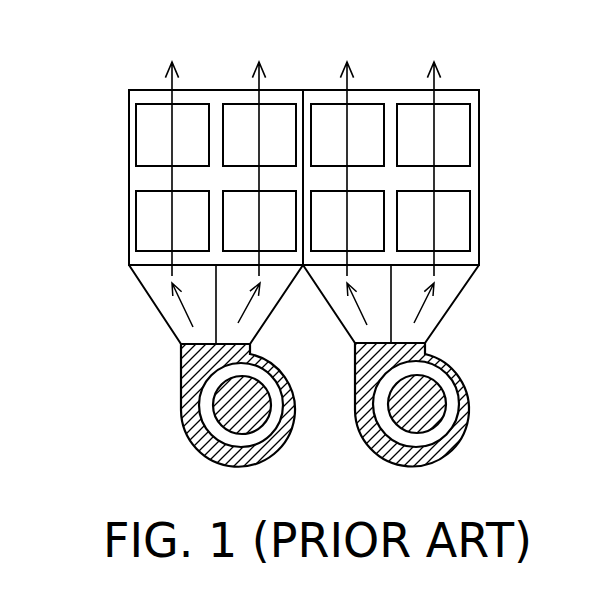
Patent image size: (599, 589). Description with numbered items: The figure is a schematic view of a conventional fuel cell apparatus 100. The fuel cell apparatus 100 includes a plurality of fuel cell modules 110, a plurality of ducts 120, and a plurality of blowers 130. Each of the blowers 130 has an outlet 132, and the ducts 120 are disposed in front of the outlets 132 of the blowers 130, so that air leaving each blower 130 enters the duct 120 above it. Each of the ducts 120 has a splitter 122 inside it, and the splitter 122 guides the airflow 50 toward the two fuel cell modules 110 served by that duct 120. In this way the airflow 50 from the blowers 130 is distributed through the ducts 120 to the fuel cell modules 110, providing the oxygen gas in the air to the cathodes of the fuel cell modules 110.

The fuel cell apparatus 100 is at (553, 488).
The fuel cell module 110 is at (477, 52).
The duct 120 is at (147, 297).
The splitter 122 is at (217, 332).
The blower 130 is at (197, 432).
The outlet 132 is at (196, 343).
The airflow 50 is at (183, 306).